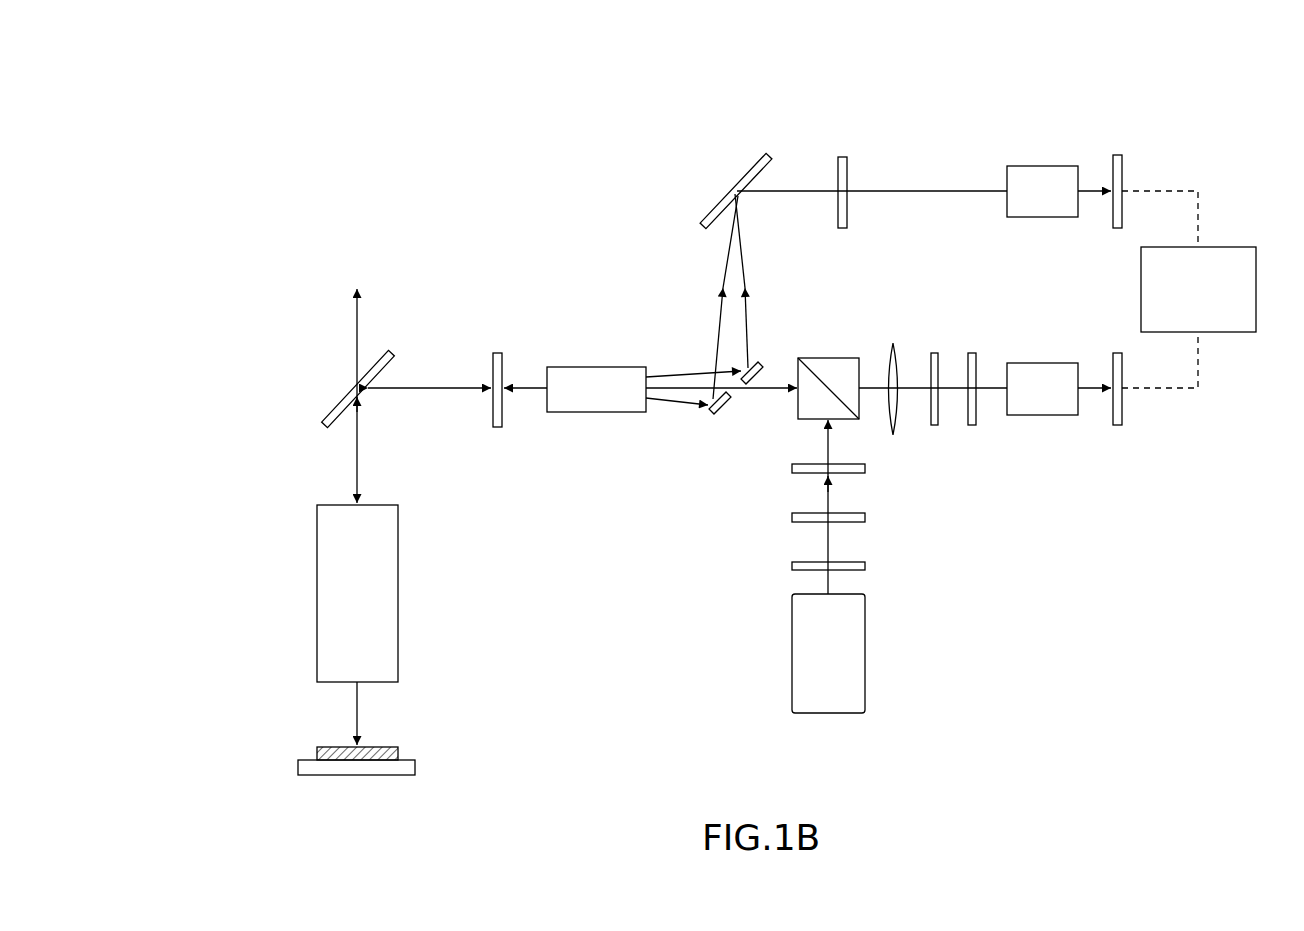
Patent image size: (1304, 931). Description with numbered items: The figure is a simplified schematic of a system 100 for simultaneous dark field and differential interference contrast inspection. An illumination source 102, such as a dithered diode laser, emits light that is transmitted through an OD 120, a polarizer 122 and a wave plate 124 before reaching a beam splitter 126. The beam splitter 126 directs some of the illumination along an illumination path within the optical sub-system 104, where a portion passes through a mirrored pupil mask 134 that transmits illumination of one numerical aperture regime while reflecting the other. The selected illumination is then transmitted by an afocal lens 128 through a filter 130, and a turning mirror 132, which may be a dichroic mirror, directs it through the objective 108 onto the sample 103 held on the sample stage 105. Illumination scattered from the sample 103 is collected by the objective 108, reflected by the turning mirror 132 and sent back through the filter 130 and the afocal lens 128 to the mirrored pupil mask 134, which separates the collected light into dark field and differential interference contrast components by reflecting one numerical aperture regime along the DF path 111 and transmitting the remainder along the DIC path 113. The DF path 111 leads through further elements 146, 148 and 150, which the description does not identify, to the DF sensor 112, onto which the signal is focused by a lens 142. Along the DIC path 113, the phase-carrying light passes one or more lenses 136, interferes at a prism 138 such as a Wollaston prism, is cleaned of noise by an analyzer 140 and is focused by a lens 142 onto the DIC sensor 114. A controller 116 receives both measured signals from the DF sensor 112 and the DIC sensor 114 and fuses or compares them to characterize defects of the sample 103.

The system 100 is at (307, 102).
The illumination source 102 is at (847, 666).
The sample 103 is at (317, 750).
The optical sub-system 104 is at (532, 202).
The sample stage 105 is at (298, 768).
The objective 108 is at (376, 608).
The DF path 111 is at (1110, 92).
The DF sensor 112 is at (1118, 155).
The DIC path 113 is at (947, 477).
The DIC sensor 114 is at (1118, 426).
The controller 116 is at (1217, 301).
The OD 120 is at (862, 571).
The polarizer 122 is at (862, 523).
The wave plate 124 is at (862, 474).
The beam splitter 126 is at (830, 357).
The afocal lens 128 is at (593, 366).
The filter 130 is at (497, 352).
The turning mirror 132 is at (338, 402).
The mirrored pupil mask 134 is at (731, 410).
The lens 136 is at (896, 343).
The prism 138 is at (936, 426).
The analyzer 140 is at (972, 353).
The lens 142 is at (1040, 416).
The mirror 146 is at (737, 186).
The optical plate 148 is at (843, 157).
The optical module 150 is at (1041, 166).